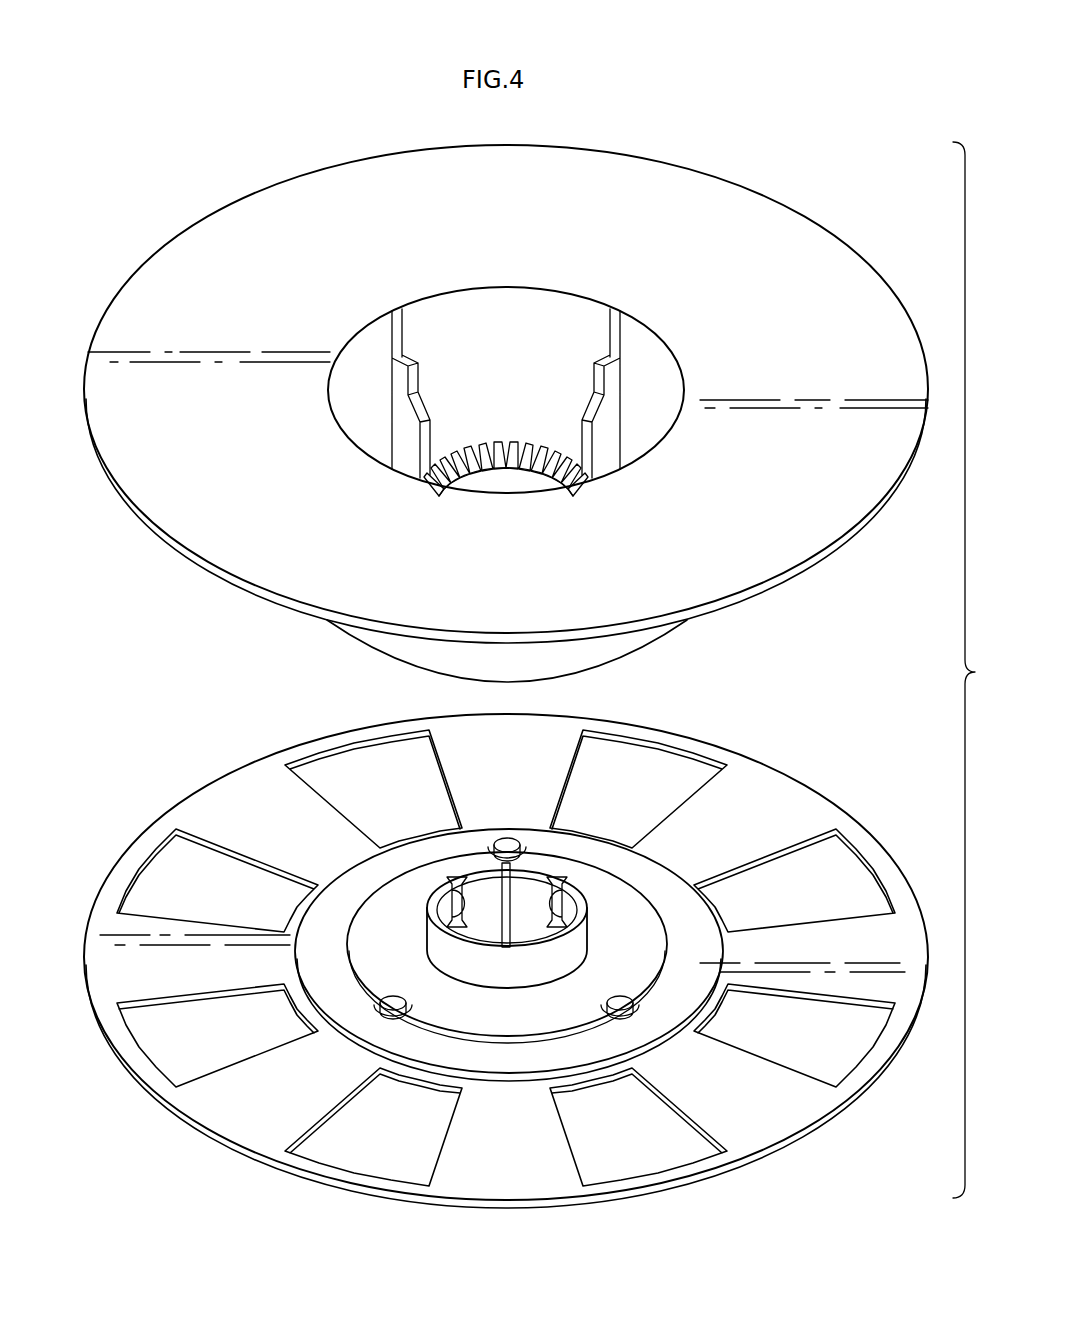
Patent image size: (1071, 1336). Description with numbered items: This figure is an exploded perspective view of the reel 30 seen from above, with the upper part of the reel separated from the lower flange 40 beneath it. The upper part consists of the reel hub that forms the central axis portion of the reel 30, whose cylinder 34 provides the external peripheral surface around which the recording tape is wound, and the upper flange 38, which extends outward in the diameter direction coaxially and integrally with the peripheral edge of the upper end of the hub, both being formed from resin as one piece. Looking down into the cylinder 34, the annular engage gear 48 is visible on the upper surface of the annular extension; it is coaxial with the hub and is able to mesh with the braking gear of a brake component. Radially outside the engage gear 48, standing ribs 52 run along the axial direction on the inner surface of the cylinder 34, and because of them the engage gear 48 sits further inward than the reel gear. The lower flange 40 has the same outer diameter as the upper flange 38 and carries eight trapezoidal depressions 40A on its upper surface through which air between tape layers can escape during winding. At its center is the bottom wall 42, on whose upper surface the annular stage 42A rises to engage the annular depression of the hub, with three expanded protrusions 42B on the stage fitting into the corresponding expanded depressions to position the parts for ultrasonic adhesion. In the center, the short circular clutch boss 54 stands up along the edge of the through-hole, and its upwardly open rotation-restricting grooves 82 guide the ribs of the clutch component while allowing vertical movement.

The reel 30 is at (777, 181).
The upper flange 38 is at (810, 248).
The cylinder 34 is at (512, 312).
The standing ribs 52 is at (612, 430).
The engage gear 48 is at (512, 452).
The lower flange 40 is at (790, 803).
The depressions 40A is at (659, 772).
The bottom wall 42 is at (655, 1018).
The annular stage 42A is at (630, 905).
The expanded protrusions 42B is at (380, 1012).
The clutch boss 54 is at (507, 975).
The rotation-restricting grooves 82 is at (510, 877).